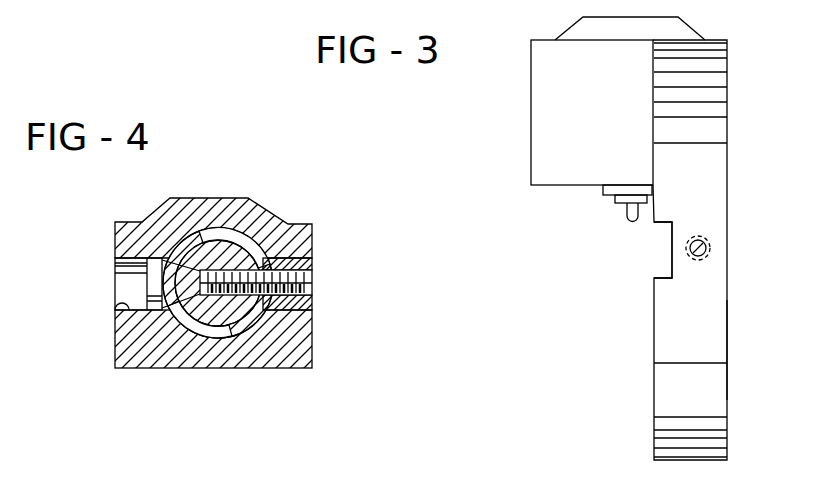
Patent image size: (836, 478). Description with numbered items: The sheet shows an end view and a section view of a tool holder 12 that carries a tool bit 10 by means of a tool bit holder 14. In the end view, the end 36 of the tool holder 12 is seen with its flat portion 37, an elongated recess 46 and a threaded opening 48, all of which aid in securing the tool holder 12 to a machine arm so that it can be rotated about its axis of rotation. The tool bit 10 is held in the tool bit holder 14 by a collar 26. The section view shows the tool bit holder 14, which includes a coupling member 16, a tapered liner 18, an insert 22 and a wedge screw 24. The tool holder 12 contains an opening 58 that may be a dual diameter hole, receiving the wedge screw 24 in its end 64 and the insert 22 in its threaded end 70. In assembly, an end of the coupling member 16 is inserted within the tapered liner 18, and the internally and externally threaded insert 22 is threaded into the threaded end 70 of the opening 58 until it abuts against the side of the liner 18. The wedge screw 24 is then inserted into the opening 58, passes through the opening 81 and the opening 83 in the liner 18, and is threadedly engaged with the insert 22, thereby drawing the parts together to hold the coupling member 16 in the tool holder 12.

In FIG. 3, the tool bit 10 is at (633, 222).
In FIG. 3, the tool holder 12 is at (727, 124).
In FIG. 4, the tool holder 12 is at (150, 214).
In FIG. 3, the tool bit holder 14 is at (617, 208).
In FIG. 3, the coupling member 16 is at (531, 125).
In FIG. 4, the coupling member 16 is at (227, 332).
In FIG. 4, the liner 18 is at (220, 226).
In FIG. 4, the insert 22 is at (293, 258).
In FIG. 4, the wedge screw 24 is at (130, 298).
In FIG. 3, the collar 26 is at (600, 193).
In FIG. 3, the end 36 is at (668, 400).
In FIG. 3, the flat portion 37 is at (722, 345).
In FIG. 3, the elongated recess 46 is at (652, 267).
In FIG. 3, the threaded opening 48 is at (710, 249).
In FIG. 4, the opening 58 is at (118, 263).
In FIG. 4, the end 64 is at (115, 306).
In FIG. 4, the end 70 is at (300, 306).
In FIG. 4, the opening 81 is at (115, 274).
In FIG. 4, the opening 83 is at (307, 280).